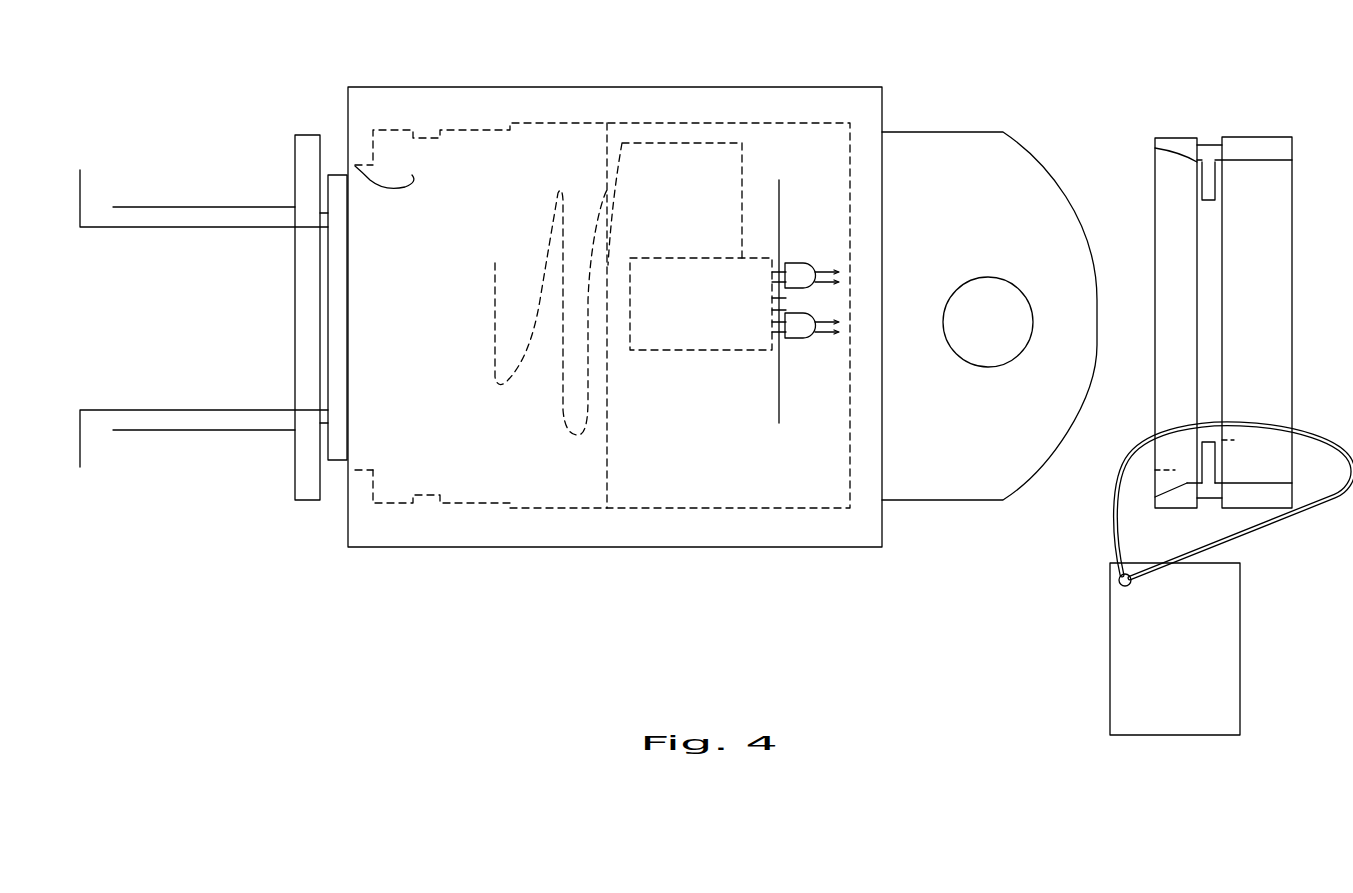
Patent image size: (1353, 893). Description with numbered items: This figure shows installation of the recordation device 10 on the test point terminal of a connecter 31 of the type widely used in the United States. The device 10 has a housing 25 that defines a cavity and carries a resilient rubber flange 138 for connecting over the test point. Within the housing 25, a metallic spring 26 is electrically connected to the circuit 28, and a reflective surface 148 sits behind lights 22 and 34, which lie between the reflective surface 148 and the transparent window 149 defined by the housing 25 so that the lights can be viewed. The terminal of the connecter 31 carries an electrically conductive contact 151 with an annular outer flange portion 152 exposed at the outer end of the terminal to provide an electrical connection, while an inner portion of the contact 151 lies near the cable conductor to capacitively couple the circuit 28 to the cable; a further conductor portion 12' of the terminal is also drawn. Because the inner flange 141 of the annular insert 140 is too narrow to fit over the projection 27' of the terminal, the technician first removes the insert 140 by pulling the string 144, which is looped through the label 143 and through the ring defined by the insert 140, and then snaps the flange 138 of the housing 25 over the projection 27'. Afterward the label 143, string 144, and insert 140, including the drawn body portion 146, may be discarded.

The recordation device 10 is at (648, 553).
The housing 25 is at (559, 87).
The connecter 31 is at (163, 98).
The projection 27' is at (279, 304).
The annular outer flange portion 152 is at (348, 415).
The upper blade 12' is at (204, 190).
The electrically conductive contact 151 is at (95, 413).
The flange 138 is at (412, 175).
The metallic spring 26 is at (502, 385).
The circuit 28 is at (701, 304).
The reflective surface 148 is at (780, 402).
The light 22 is at (793, 263).
The light 34 is at (794, 338).
The transparent window 149 is at (876, 298).
The string 144 is at (1113, 488).
The annular insert 140 is at (1155, 210).
The inner flange 141 is at (1212, 210).
The cover body 146 is at (1172, 137).
The label 143 is at (1110, 698).